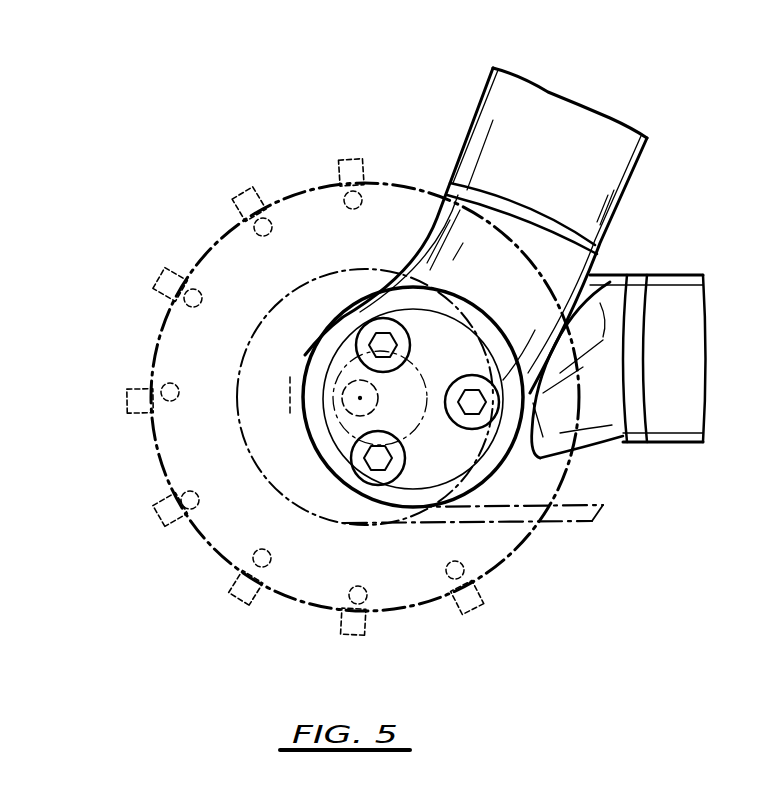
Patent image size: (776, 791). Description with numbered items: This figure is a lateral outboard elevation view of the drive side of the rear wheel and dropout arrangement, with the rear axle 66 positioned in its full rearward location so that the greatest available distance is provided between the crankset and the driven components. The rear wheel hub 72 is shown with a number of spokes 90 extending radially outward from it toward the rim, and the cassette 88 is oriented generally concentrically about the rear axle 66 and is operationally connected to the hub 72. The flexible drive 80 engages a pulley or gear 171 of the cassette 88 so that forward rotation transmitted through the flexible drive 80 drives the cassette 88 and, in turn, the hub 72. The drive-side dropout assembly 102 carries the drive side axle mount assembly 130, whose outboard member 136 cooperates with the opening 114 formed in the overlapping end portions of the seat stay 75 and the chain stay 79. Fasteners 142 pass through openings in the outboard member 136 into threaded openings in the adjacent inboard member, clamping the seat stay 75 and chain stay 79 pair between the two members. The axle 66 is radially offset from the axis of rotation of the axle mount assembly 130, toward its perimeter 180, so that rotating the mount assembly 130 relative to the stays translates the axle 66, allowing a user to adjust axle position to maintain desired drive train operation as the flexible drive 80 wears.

The hub 72 is at (223, 228).
The spokes 90 is at (258, 185).
The pulley or gear 171 is at (343, 268).
The cassette 88 is at (250, 462).
The outboard member 136 is at (470, 310).
The fasteners 142 is at (477, 353).
The rear axle 66 is at (318, 396).
The seat stay 75 is at (633, 157).
The opening 114 is at (495, 352).
The perimeter 180 is at (577, 277).
The chain stay 79 is at (660, 442).
The flexible drive 80 is at (550, 526).
The drive side axle mount assembly 130 is at (243, 520).
The drive-side dropout assembly 102 is at (499, 580).